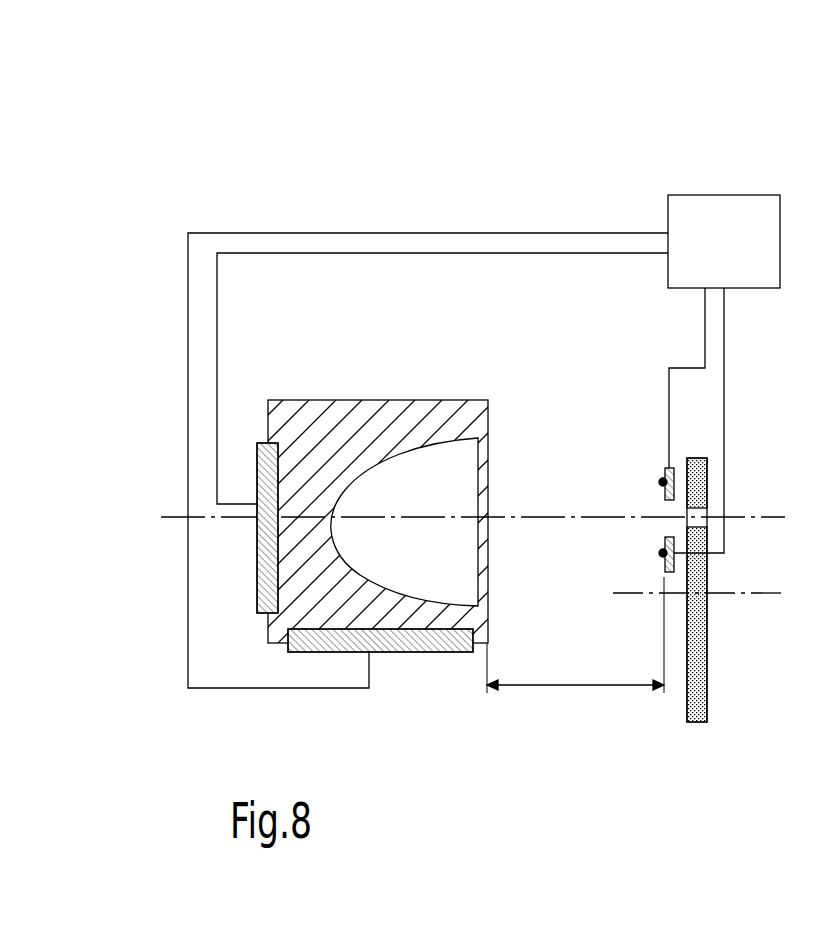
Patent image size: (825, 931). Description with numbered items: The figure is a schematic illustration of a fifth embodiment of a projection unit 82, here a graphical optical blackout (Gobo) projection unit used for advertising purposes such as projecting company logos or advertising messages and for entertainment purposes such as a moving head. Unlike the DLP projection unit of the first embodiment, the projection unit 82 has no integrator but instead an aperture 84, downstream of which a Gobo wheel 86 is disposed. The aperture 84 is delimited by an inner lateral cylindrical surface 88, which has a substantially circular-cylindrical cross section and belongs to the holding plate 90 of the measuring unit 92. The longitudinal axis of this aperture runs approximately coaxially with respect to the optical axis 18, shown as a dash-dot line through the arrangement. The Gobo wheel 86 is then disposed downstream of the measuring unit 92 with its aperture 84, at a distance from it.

The optical axis 18 is at (172, 516).
The projection unit 82 is at (645, 138).
The aperture 84 is at (664, 531).
The Gobo wheel 86 is at (697, 675).
The inner lateral cylindrical surface 88 is at (663, 507).
The holding plate 90 is at (666, 479).
The measuring unit 92 is at (673, 563).